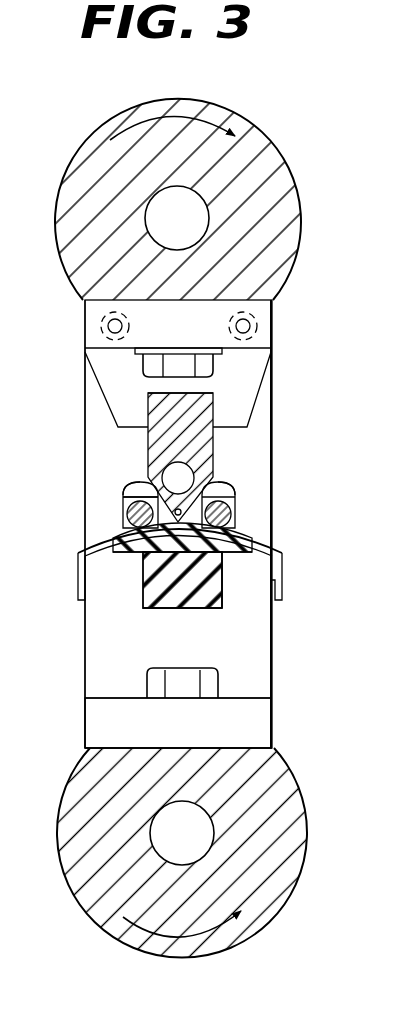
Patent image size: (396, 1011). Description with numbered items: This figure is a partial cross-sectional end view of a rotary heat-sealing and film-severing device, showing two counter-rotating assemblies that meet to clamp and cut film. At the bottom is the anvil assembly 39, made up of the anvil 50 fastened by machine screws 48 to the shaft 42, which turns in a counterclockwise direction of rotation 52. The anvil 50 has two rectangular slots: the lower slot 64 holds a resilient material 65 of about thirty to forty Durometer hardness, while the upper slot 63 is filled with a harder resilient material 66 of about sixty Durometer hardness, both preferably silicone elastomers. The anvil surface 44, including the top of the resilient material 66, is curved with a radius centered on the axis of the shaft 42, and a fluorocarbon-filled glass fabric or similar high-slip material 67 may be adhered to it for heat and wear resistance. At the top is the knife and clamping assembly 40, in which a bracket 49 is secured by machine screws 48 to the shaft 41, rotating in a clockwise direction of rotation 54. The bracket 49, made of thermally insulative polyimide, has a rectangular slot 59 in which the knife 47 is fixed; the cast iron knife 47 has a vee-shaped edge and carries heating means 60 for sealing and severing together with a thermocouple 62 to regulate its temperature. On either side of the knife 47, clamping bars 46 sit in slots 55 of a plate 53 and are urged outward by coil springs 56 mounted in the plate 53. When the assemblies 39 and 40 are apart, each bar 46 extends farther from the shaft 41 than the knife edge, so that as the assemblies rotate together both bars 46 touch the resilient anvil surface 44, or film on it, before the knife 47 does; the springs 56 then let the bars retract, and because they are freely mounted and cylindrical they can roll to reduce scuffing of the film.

The anvil assembly 39 is at (77, 667).
The knife and clamping assembly 40 is at (85, 437).
The shaft 41 is at (270, 152).
The shaft 42 is at (300, 808).
The anvil surface 44 is at (257, 543).
The clamping bars 46 is at (220, 508).
The knife 47 is at (205, 437).
The machine screws 48 is at (205, 360).
The bracket 49 is at (247, 376).
The anvil 50 is at (273, 682).
The counterclockwise direction of rotation 52 is at (147, 920).
The plate 53 is at (85, 466).
The clockwise direction of rotation 54 is at (160, 117).
The slots 55 is at (130, 480).
The coil springs 56 is at (227, 488).
The rectangular slot 59 is at (148, 398).
The heating means 60 is at (183, 478).
The thermocouple 62 is at (128, 495).
The upper slot 63 is at (233, 552).
The lower slot 64 is at (225, 603).
The resilient material 65 is at (147, 603).
The resilient material 66 is at (136, 548).
The high-slip material 67 is at (80, 562).